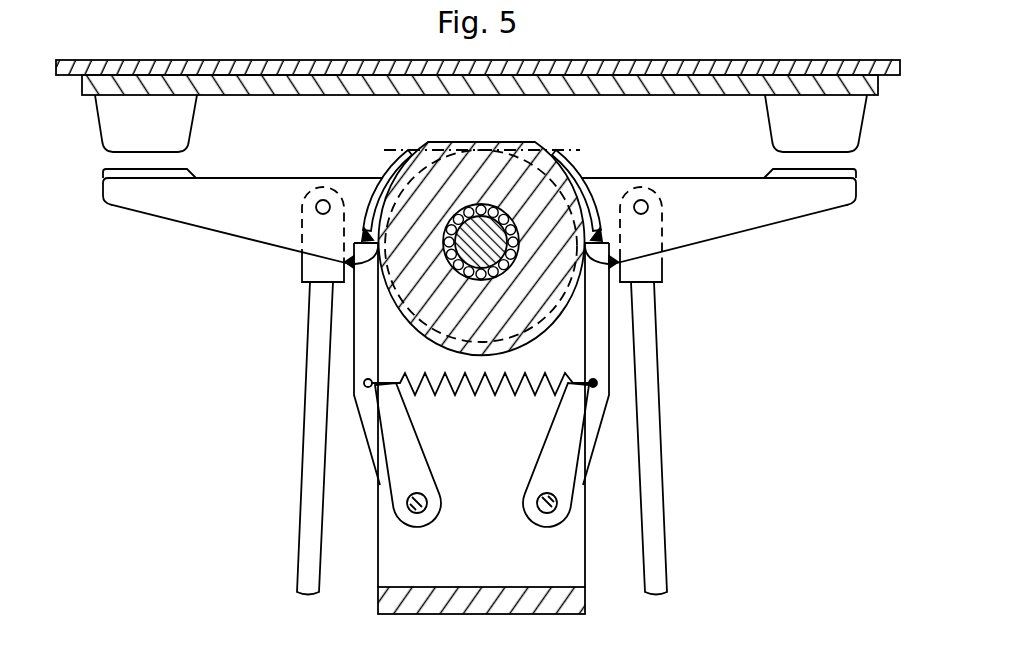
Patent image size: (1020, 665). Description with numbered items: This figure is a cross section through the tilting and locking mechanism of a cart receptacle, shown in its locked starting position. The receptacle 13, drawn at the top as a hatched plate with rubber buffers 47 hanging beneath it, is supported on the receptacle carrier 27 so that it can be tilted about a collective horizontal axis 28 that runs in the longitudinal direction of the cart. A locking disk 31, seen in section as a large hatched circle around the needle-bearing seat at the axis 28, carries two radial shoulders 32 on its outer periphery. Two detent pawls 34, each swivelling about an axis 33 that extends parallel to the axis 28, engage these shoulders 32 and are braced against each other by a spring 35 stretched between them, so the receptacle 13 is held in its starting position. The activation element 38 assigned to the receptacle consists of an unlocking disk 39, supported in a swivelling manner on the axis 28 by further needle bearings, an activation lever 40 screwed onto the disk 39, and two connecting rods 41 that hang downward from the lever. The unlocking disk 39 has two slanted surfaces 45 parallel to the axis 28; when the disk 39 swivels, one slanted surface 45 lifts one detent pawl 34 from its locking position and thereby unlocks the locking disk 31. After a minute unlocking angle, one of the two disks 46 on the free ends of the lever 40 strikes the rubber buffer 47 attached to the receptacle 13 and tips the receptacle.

The receptacle 13 is at (233, 59).
The receptacle carrier 27 is at (475, 600).
The horizontal axis 28 is at (498, 200).
The locking disk 31 is at (478, 173).
The radial shoulder 32 is at (350, 262).
The axis 33 is at (540, 501).
The detent pawl 34 is at (560, 440).
The spring 35 is at (474, 392).
The activation element 38 is at (672, 342).
The unlocking disk 39 is at (403, 147).
The activation lever 40 is at (228, 222).
The connecting rod 41 is at (320, 466).
The slanted surface 45 is at (359, 230).
The disk 46 is at (180, 170).
The rubber buffer 47 is at (186, 128).